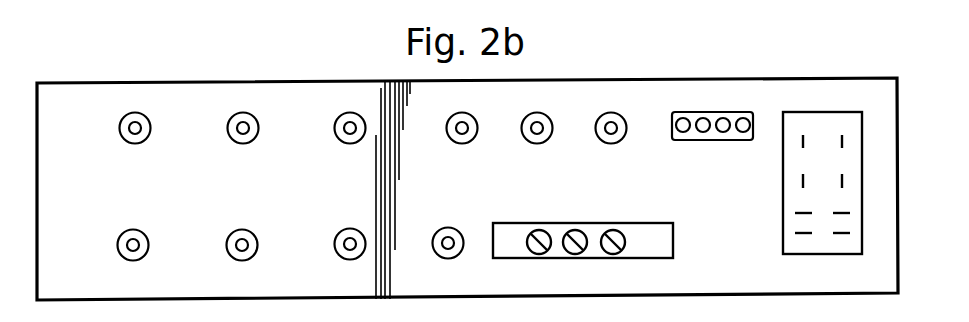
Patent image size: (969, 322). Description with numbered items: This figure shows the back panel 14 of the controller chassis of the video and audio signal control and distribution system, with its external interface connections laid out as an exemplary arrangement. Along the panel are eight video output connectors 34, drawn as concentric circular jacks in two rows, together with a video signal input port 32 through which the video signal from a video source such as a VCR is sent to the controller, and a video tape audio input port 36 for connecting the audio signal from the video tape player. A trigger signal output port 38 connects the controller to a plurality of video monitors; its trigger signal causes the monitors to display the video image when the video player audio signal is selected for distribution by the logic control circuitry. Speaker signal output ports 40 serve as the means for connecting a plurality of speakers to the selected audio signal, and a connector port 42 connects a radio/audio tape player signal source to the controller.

The back panel 14 is at (75, 101).
The video output connectors 34 is at (156, 111).
The video signal input port 32 is at (553, 112).
The video tape audio input port 36 is at (623, 118).
The speaker signal output ports 40 is at (688, 141).
The connector port 42 is at (793, 117).
The trigger signal output port 38 is at (659, 257).